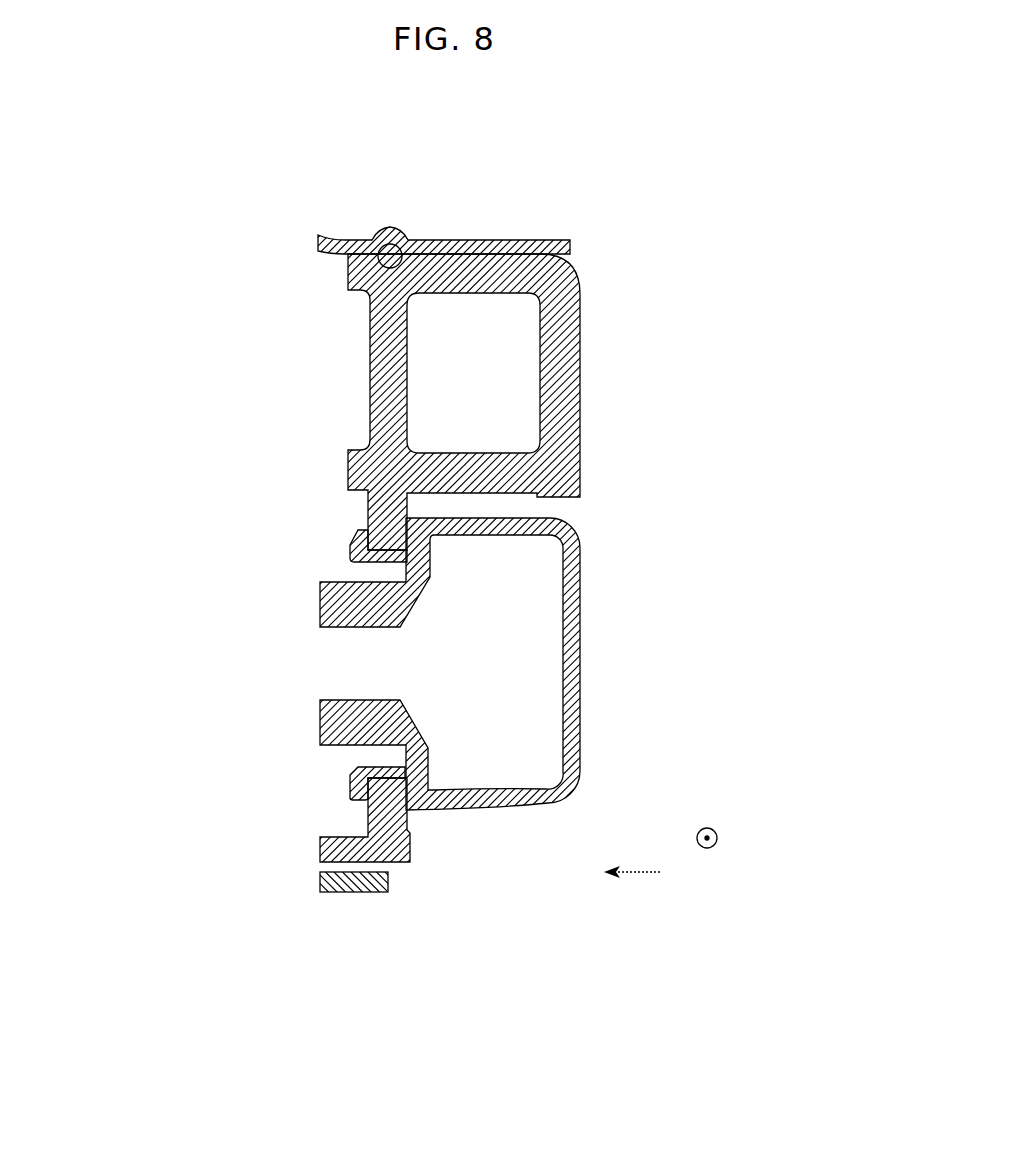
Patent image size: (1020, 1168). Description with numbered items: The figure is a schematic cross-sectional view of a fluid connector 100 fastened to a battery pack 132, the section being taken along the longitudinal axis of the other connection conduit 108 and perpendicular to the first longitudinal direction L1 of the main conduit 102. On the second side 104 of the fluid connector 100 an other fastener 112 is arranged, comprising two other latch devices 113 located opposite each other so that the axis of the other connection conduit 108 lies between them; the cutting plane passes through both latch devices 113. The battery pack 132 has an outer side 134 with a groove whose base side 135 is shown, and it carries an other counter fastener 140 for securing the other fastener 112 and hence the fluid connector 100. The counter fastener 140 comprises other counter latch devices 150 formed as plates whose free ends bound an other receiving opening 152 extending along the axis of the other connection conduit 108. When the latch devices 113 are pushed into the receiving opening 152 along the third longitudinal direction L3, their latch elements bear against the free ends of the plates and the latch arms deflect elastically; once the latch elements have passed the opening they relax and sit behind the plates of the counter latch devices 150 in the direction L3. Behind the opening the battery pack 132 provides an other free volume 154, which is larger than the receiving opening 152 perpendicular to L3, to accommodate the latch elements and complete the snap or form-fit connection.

The fluid connector 100 is at (510, 572).
The main conduit 102 is at (509, 659).
The second side 104 is at (327, 798).
The other connection conduit 108 is at (260, 760).
The other fastener 112 is at (510, 560).
The other latch devices 113 is at (320, 560).
The battery pack 132 is at (530, 214).
The outer side 134 is at (582, 357).
The base side 135 is at (412, 507).
The other counter fastener 140 is at (510, 601).
The other counter latch devices 150 is at (366, 520).
The other receiving opening 152 is at (327, 548).
The other free volume 154 is at (308, 757).
The first longitudinal direction L1 is at (719, 833).
The third longitudinal direction L3 is at (640, 872).